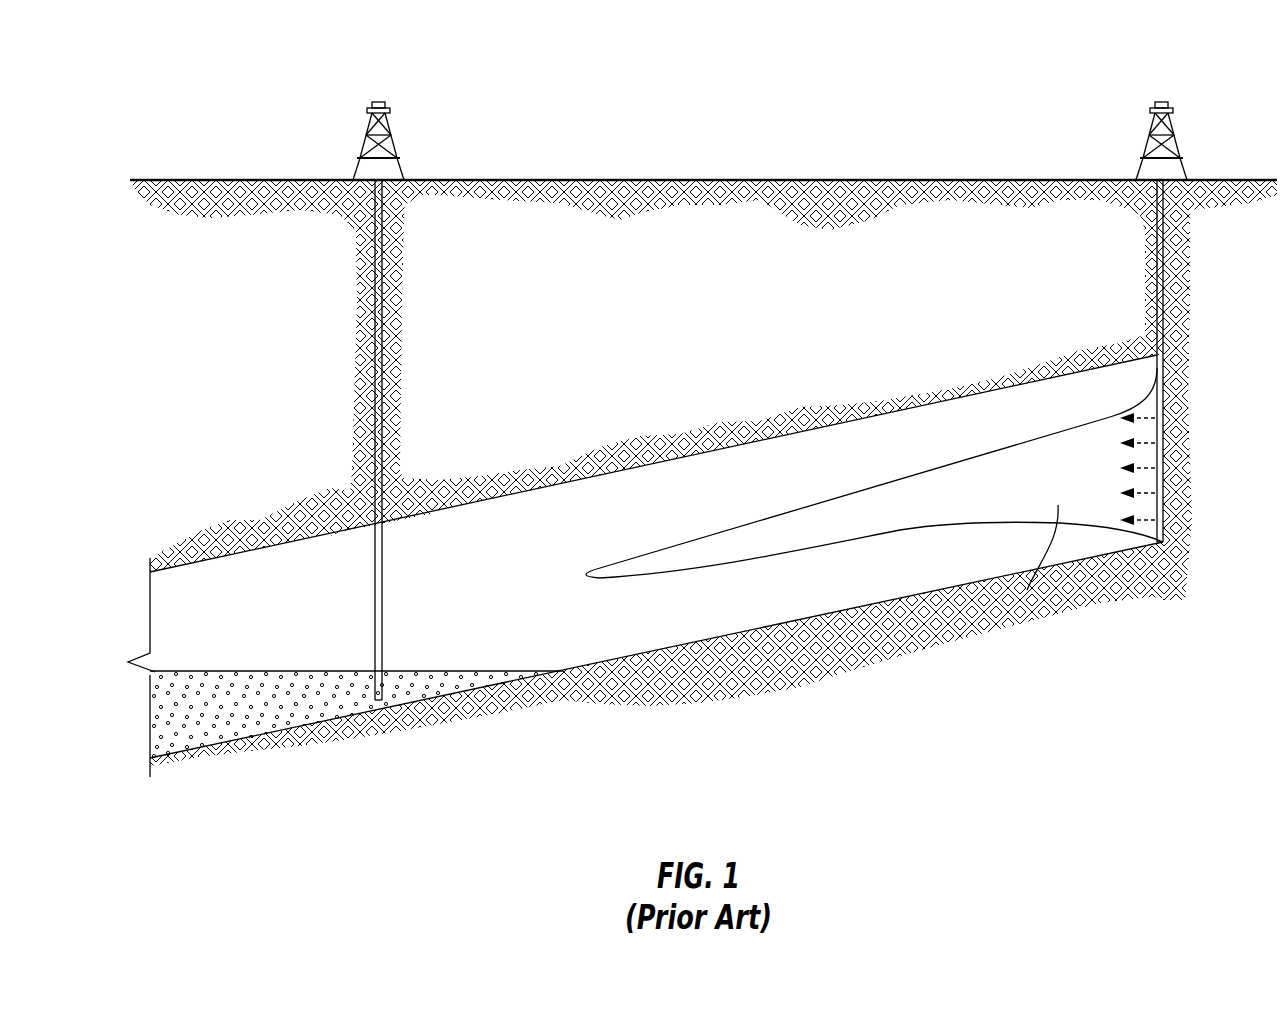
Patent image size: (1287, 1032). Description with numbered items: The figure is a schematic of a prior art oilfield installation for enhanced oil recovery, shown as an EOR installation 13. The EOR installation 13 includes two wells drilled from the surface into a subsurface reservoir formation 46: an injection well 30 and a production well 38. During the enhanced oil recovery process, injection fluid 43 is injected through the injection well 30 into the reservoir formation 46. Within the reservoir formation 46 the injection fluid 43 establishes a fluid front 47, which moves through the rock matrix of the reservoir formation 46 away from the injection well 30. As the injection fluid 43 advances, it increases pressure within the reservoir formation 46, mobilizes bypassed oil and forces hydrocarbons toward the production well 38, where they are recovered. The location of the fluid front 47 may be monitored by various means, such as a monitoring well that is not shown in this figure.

The EOR installation 13 is at (214, 55).
The injection well 30 is at (1148, 139).
The production well 38 is at (366, 138).
The injection fluid 43 is at (1034, 574).
The reservoir formation 46 is at (474, 598).
The fluid front 47 is at (622, 580).